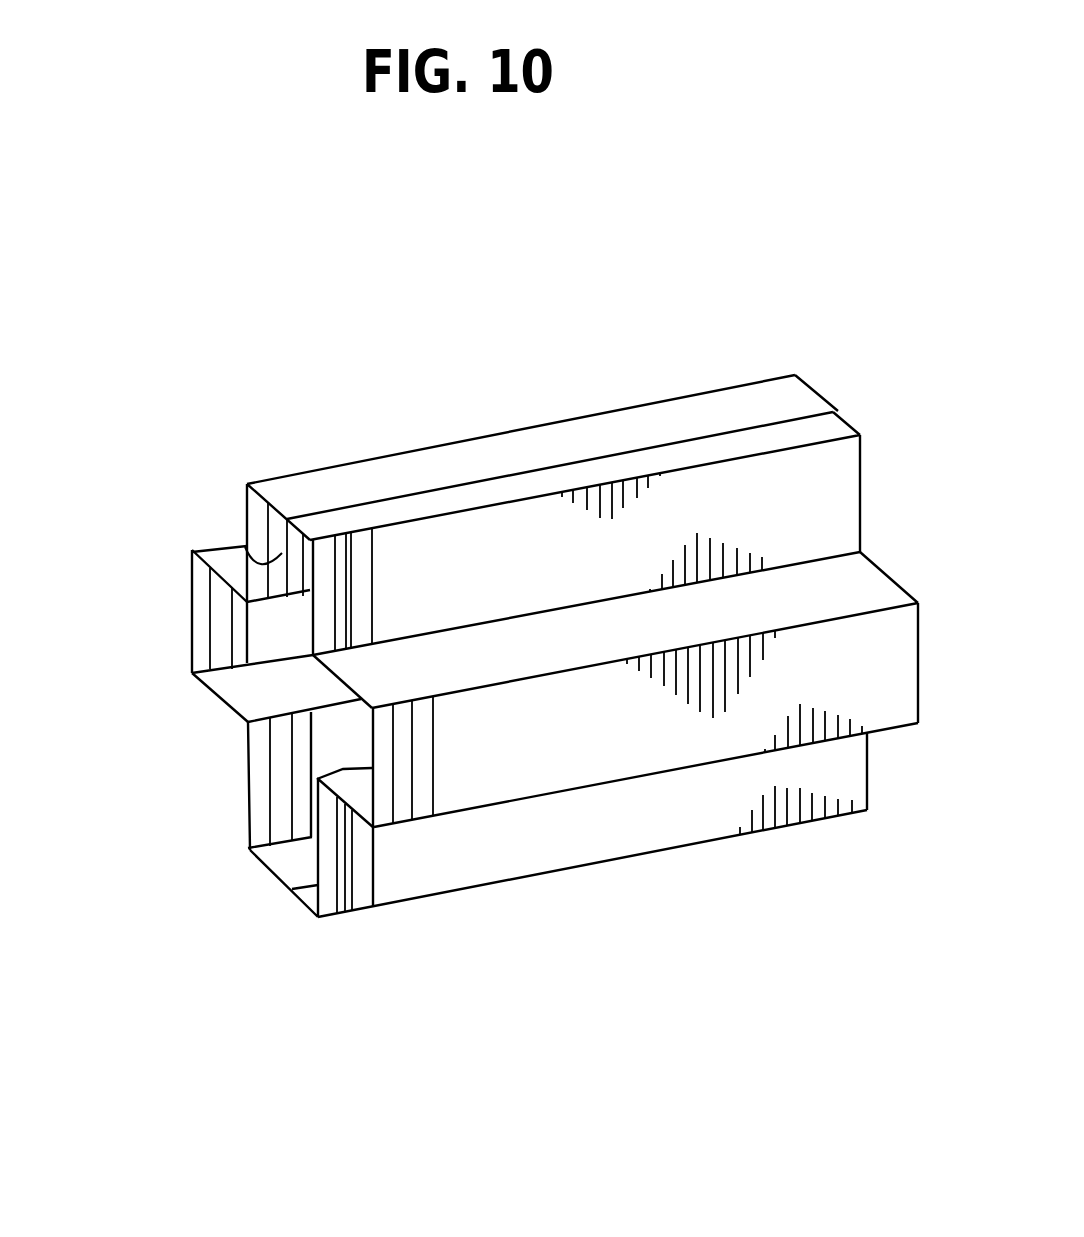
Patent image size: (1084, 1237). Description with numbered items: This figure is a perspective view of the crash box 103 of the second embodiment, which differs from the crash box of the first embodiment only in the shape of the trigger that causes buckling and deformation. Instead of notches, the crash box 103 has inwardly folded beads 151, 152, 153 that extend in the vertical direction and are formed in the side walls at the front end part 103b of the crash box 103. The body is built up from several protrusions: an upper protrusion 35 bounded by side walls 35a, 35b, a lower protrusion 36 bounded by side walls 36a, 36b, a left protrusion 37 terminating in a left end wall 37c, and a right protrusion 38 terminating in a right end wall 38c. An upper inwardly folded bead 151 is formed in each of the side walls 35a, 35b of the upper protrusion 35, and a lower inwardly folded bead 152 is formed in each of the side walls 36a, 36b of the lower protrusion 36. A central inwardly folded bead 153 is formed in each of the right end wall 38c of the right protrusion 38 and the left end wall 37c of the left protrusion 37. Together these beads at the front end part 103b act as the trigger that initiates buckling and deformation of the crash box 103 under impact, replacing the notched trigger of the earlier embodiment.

The crash box 103 is at (570, 387).
The front end part 103b is at (383, 897).
The upper protrusion 35 is at (318, 492).
The side wall of upper protrusion 35a is at (408, 593).
The side wall of upper protrusion 35b is at (253, 520).
The lower protrusion 36 is at (482, 888).
The side wall of lower protrusion 36a is at (443, 868).
The side wall of lower protrusion 36b is at (282, 758).
The left protrusion 37 is at (625, 740).
The left end wall 37c is at (515, 775).
The right protrusion 38 is at (190, 603).
The right end wall 38c is at (203, 626).
The upper inwardly folded bead 151 is at (192, 552).
The lower inwardly folded bead 152 is at (282, 825).
The central inwardly folded bead 153 is at (222, 639).